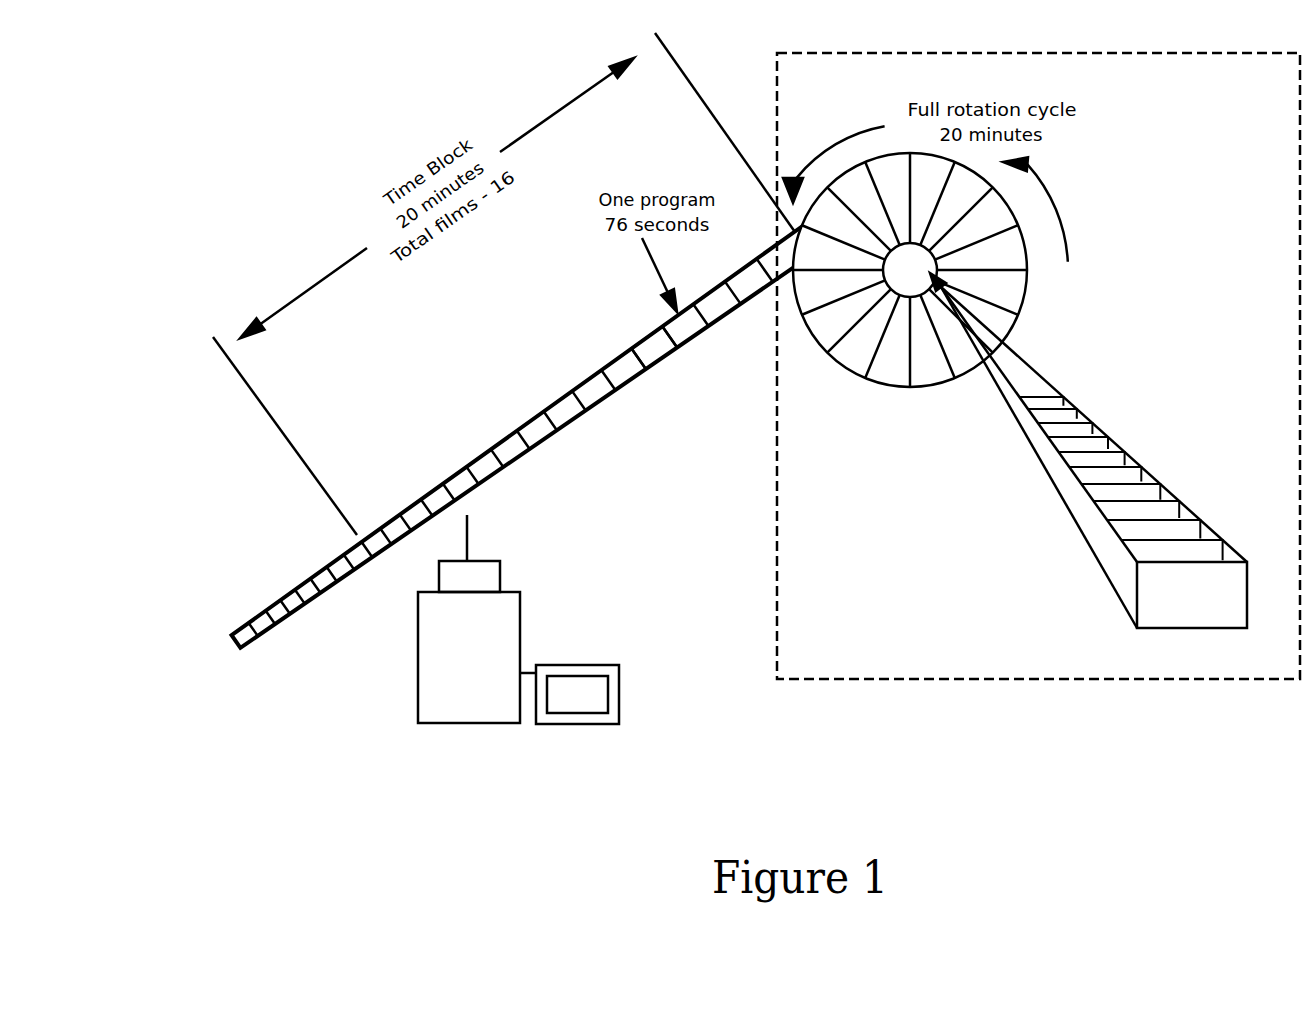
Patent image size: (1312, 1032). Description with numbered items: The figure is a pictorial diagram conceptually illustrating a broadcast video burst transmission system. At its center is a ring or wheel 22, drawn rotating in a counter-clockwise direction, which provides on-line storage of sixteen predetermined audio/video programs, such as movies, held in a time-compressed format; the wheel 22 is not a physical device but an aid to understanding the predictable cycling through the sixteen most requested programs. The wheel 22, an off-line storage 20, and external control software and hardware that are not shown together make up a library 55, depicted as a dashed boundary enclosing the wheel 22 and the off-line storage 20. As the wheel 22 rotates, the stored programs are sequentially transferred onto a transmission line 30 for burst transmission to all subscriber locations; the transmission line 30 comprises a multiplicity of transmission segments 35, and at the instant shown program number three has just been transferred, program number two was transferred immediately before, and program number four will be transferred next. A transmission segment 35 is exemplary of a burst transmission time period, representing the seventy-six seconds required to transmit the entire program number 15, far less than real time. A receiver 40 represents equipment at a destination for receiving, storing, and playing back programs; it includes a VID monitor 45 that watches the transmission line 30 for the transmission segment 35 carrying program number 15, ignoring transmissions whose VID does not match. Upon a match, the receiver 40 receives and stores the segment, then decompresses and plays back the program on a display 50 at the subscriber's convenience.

The on-line storage carousel (rotating program wheel) 15 is at (873, 388).
The off-line storage 20 is at (1103, 570).
The wheel 22 is at (783, 368).
The transmission line 30 is at (513, 387).
The transmission segment 35 is at (667, 368).
The receiver 40 is at (418, 650).
The VID monitor 45 is at (500, 572).
The display 50 is at (587, 663).
The library 55 is at (953, 680).